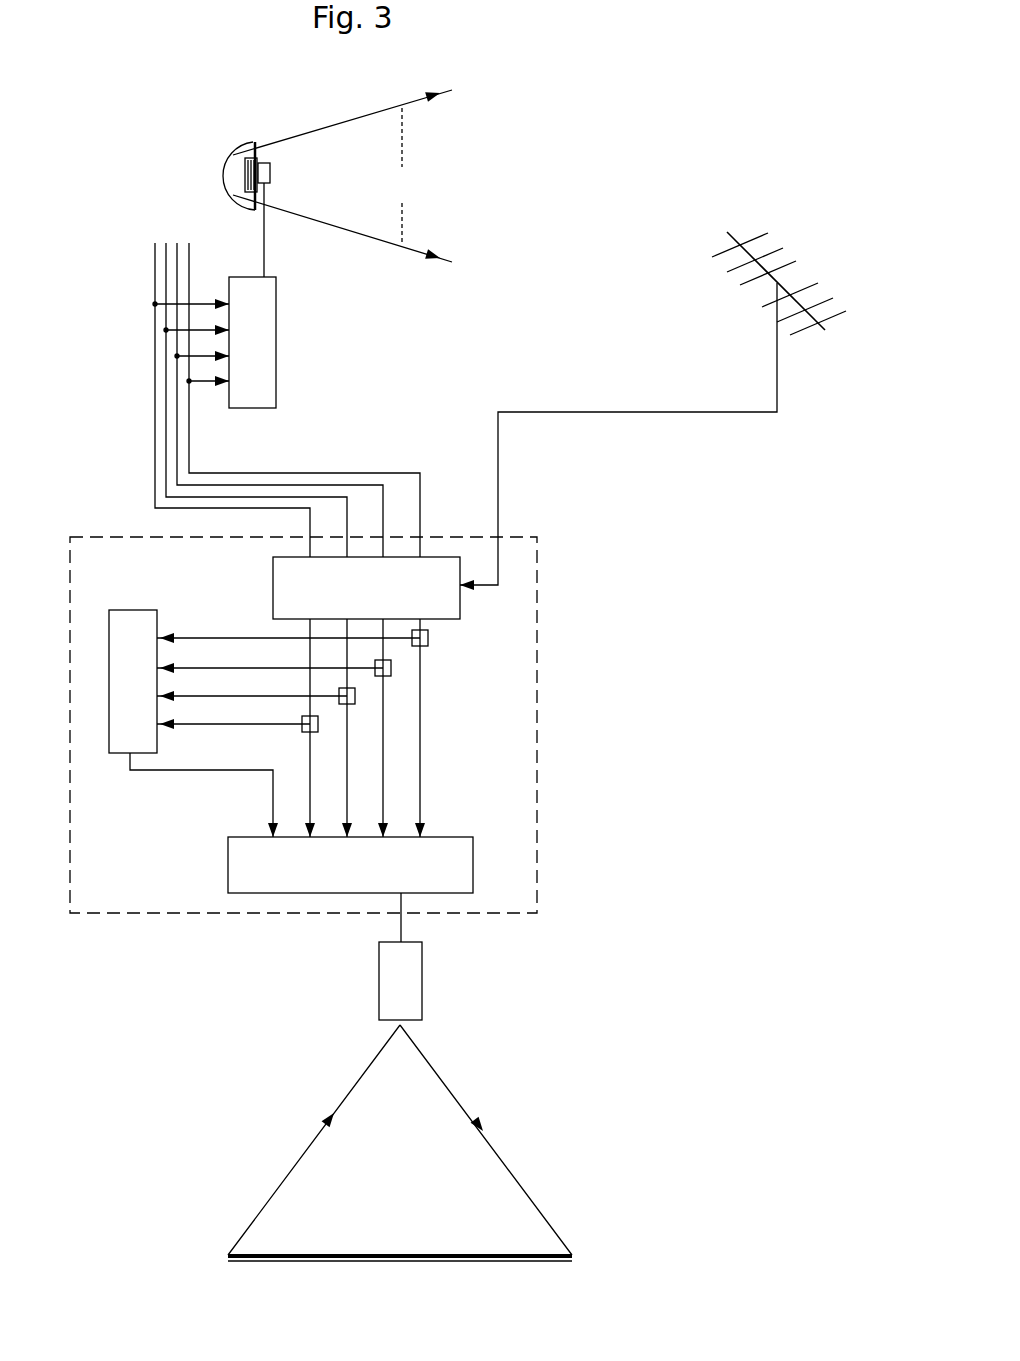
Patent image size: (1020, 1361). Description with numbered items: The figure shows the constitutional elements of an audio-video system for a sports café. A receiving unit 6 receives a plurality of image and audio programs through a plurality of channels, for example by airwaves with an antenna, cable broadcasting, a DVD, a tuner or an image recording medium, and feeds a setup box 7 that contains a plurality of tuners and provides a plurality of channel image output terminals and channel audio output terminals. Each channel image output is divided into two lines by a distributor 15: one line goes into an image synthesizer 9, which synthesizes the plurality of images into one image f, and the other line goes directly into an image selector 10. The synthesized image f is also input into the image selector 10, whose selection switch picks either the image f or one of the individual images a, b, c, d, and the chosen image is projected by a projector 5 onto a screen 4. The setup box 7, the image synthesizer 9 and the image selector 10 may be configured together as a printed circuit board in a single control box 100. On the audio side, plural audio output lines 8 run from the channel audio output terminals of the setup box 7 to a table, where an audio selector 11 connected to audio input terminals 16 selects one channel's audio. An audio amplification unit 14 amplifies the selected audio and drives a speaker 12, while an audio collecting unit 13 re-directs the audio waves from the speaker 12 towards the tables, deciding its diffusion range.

The screen 4 is at (350, 1252).
The projector 5 is at (412, 995).
The receiving unit 6 is at (498, 503).
The setup box 7 is at (287, 587).
The audio output lines 8 is at (429, 556).
The image synthesizer 9 is at (118, 612).
The image selector 10 is at (243, 872).
The audio selector 11 is at (244, 410).
The speaker 12 is at (271, 172).
The audio collecting unit 13 is at (247, 140).
The audio amplification unit 14 is at (276, 373).
The distributor 15 is at (428, 642).
The audio input terminals 16 is at (229, 292).
The control box 100 is at (505, 770).